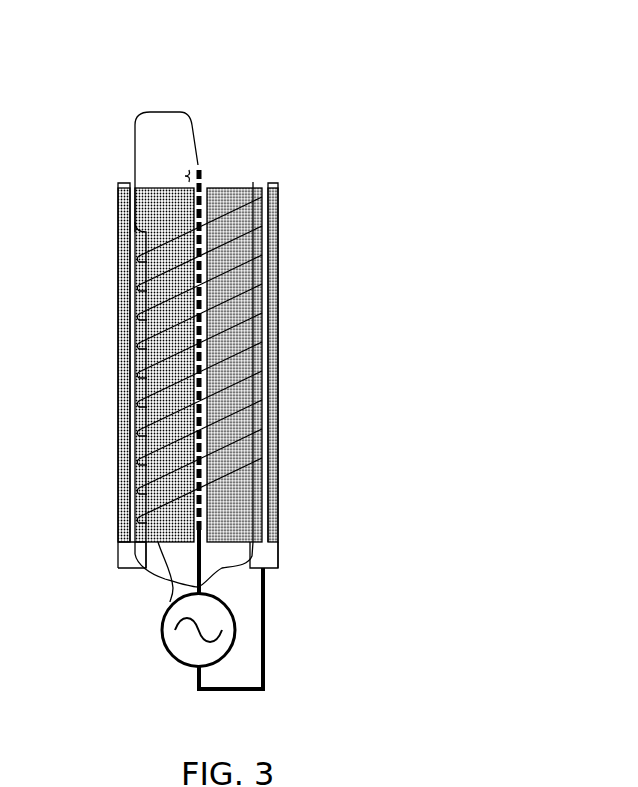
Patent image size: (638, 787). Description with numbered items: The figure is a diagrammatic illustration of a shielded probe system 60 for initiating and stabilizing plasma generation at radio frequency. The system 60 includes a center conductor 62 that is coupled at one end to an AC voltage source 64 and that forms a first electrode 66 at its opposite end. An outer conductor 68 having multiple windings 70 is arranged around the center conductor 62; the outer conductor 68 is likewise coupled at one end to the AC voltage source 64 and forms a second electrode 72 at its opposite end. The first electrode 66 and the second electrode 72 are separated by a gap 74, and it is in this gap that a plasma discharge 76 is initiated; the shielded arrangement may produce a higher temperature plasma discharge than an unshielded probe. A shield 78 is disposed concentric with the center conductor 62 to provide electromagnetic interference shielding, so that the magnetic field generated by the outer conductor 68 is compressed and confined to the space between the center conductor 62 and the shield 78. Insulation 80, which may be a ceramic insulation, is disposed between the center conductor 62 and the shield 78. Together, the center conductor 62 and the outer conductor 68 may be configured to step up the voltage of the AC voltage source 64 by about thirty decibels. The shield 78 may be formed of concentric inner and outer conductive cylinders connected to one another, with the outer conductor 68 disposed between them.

The shielded probe system 60 is at (458, 71).
The center conductor 62 is at (168, 600).
The AC voltage source 64 is at (161, 636).
The first electrode 66 is at (206, 184).
The outer conductor 68 is at (279, 195).
The windings 70 is at (136, 462).
The second electrode 72 is at (200, 167).
The gap 74 is at (186, 176).
The plasma discharge 76 is at (203, 173).
The shield 78 is at (278, 531).
The insulation 80 is at (263, 488).